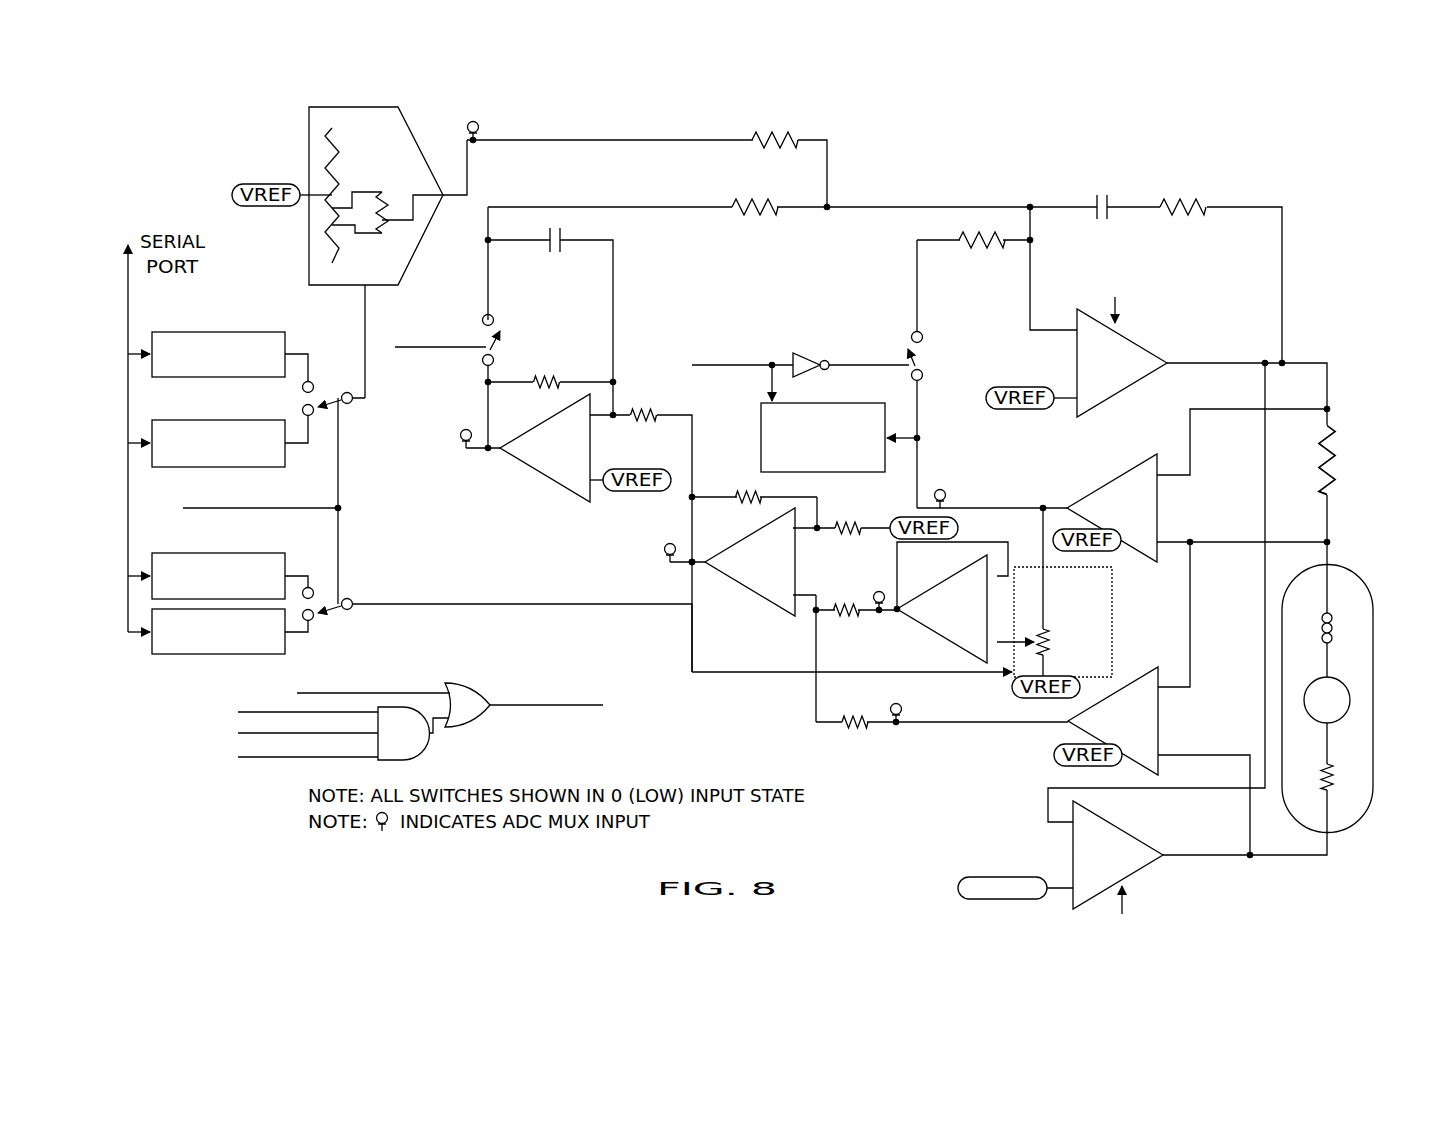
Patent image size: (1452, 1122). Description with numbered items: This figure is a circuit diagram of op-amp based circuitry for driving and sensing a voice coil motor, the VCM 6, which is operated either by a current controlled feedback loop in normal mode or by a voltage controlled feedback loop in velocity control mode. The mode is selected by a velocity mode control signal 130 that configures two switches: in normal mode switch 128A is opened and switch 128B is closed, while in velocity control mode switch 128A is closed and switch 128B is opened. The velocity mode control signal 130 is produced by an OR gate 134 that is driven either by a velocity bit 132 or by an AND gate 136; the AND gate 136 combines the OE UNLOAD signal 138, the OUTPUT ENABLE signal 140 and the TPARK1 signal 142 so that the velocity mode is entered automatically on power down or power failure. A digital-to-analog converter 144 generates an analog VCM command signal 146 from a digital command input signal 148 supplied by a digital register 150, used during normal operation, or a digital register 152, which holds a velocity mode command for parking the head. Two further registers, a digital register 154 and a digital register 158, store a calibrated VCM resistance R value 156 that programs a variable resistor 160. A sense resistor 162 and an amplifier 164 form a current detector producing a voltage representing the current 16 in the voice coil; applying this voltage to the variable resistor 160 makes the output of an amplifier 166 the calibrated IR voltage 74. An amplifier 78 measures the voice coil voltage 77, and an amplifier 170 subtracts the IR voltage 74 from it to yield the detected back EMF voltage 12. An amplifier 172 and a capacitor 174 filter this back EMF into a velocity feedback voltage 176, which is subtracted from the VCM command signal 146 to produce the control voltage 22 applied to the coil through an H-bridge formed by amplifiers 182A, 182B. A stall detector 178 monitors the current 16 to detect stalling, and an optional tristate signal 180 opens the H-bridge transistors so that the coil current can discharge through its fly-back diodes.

The VCM 6 is at (1349, 568).
The detected back EMF voltage 12 is at (677, 567).
The current 16 is at (1057, 505).
The control voltage 22 is at (1213, 368).
The IR voltage 74 is at (885, 617).
The voice coil voltage 77 is at (988, 728).
The amplifier 78 is at (1160, 713).
The switch 128A is at (494, 333).
The switch 128B is at (926, 358).
The velocity mode control signal 130 is at (423, 352).
The velocity bit 132 is at (432, 692).
The OR gate 134 is at (472, 683).
The AND gate 136 is at (424, 747).
The OE UNLOAD signal 138 is at (238, 757).
The OUTPUT ENABLE signal 140 is at (338, 462).
The TPARK1 signal 142 is at (238, 733).
The digital-to-analog converter 144 is at (309, 130).
The VCM command signal 146 is at (578, 140).
The digital command input signal 148 is at (365, 312).
The digital register 150 is at (258, 332).
The digital register 152 is at (258, 420).
The digital register 154 is at (243, 553).
The calibrated VCM resistance R value 156 is at (525, 610).
The digital register 158 is at (238, 654).
The variable resistor 160 is at (1112, 600).
The sense resistor 162 is at (1338, 428).
The amplifier 164 is at (1108, 480).
The amplifier 166 is at (938, 634).
The amplifier 170 is at (752, 593).
The amplifier 172 is at (543, 487).
The capacitor 174 is at (550, 255).
The velocity feedback voltage 176 is at (663, 215).
The stall detector 178 is at (832, 403).
The tristate signal 180 is at (1118, 305).
The amplifier 182A is at (1096, 604).
The amplifier 182B is at (1120, 825).